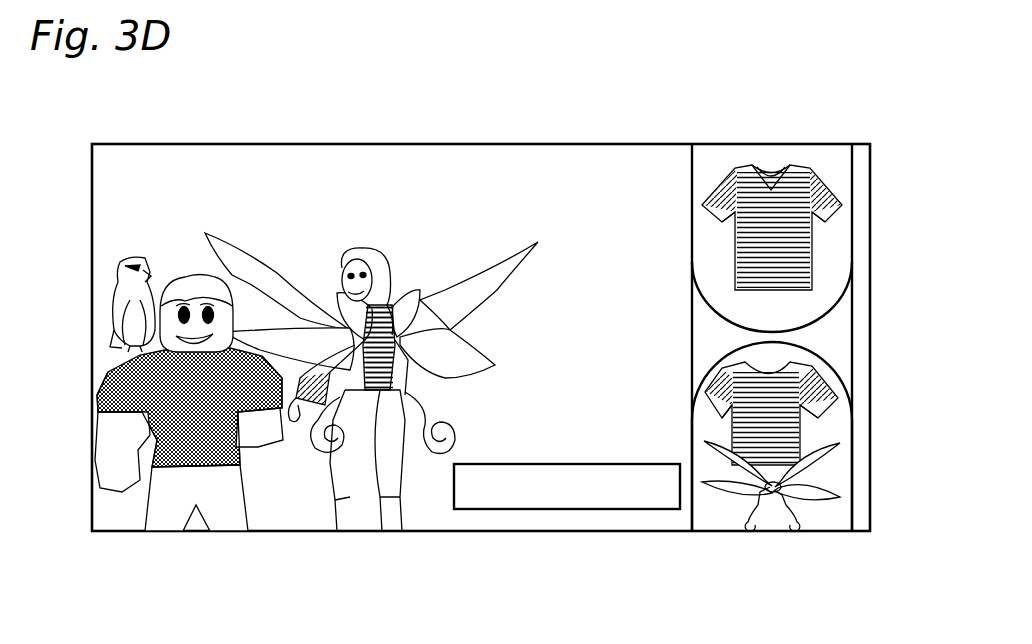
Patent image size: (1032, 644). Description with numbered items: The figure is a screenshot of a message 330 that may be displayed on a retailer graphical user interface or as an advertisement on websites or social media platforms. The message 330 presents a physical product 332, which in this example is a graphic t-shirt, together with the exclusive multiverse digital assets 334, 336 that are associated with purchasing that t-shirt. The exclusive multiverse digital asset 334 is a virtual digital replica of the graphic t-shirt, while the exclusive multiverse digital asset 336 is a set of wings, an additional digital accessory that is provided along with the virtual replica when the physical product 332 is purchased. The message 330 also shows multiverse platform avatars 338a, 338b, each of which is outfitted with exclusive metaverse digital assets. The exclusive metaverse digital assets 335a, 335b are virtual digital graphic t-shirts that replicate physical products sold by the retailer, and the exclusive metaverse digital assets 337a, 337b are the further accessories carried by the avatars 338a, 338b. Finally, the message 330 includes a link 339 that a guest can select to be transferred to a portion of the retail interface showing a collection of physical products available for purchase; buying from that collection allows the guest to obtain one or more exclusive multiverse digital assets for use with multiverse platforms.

The message 330 is at (730, 101).
The physical product 332 is at (845, 182).
The exclusive multiverse digital asset 334 is at (835, 376).
The exclusive multiverse digital asset 336 is at (815, 467).
The exclusive metaverse digital asset 335a is at (160, 470).
The exclusive metaverse digital asset 335b is at (380, 442).
The exclusive metaverse digital asset 337a is at (116, 277).
The exclusive metaverse digital asset 337b is at (433, 462).
The multiverse platform avatar 338a is at (113, 453).
The multiverse platform avatar 338b is at (363, 258).
The link 339 is at (595, 510).